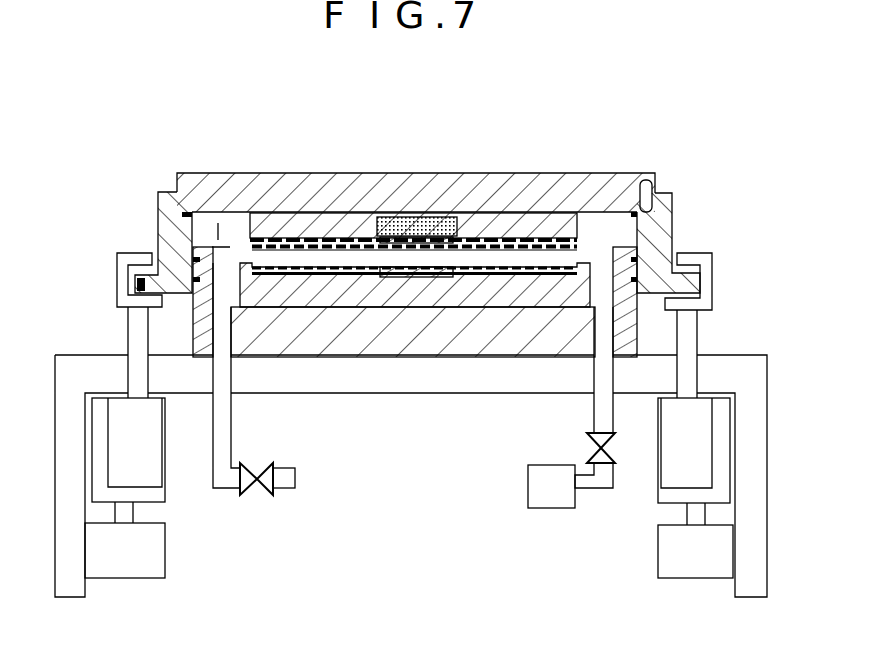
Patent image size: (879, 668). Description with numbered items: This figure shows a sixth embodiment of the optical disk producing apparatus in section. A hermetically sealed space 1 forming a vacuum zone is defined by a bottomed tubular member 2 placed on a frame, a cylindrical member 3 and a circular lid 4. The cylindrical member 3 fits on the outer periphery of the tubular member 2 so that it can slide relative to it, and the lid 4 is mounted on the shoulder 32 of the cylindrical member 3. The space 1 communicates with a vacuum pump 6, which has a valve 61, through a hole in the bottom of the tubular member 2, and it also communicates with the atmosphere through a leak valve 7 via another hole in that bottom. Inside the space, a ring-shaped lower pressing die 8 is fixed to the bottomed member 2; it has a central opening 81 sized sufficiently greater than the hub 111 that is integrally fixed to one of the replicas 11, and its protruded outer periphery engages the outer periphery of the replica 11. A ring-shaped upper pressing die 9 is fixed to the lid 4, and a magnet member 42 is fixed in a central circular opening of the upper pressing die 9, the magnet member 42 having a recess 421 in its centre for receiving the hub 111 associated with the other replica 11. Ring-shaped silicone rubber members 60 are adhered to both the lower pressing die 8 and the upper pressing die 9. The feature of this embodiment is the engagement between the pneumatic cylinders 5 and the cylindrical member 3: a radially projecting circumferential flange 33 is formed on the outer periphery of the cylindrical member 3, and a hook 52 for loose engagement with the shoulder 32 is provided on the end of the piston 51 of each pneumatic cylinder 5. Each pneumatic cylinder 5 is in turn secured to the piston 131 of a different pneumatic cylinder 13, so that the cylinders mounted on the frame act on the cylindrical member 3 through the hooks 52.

The hermetically sealed space 1 is at (221, 235).
The bottomed tubular member 2 is at (288, 346).
The cylindrical member 3 is at (674, 206).
The circular lid 4 is at (207, 170).
The pneumatic cylinders 5 is at (168, 476).
The vacuum pump 6 is at (552, 514).
The leak valve 7 is at (275, 492).
The lower pressing die 8 is at (473, 294).
The upper pressing die 9 is at (537, 210).
The replicas 11 is at (314, 262).
The pneumatic cylinder 13 is at (692, 584).
The shoulder 32 is at (644, 178).
The circumferential flange 33 is at (680, 287).
The magnet member 42 is at (415, 238).
The piston 51 is at (128, 335).
The hook 52 is at (140, 253).
The silicone rubber member 60 is at (264, 250).
The valve 61 is at (590, 440).
The central opening 81 is at (388, 280).
The hub 111 is at (470, 266).
The piston 131 is at (684, 511).
The recess 421 is at (387, 216).